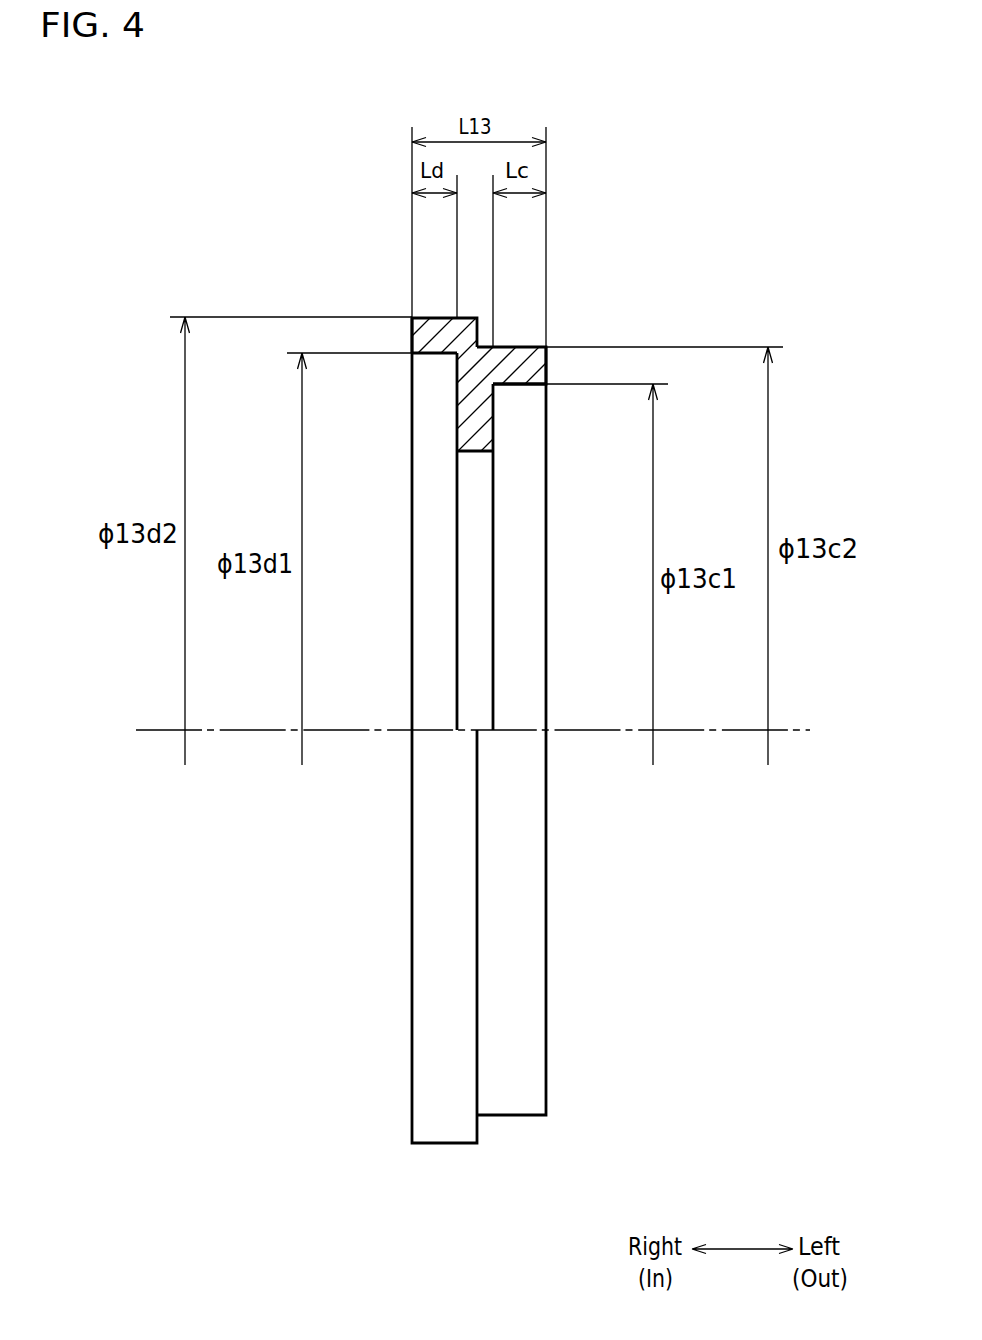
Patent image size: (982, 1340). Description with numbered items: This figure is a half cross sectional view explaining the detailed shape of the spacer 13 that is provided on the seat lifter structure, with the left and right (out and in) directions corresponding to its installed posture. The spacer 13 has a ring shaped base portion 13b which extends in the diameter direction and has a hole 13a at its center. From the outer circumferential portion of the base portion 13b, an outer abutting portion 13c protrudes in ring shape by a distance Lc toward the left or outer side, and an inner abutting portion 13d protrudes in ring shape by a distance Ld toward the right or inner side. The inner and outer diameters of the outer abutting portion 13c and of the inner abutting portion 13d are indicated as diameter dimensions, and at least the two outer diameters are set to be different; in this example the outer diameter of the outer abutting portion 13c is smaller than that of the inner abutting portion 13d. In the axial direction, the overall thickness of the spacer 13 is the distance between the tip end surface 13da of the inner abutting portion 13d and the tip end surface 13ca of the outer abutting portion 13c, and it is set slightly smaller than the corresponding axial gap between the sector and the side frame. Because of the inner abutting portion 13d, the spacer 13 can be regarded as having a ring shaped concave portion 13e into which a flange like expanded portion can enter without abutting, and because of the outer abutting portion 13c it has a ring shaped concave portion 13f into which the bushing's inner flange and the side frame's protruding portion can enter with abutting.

The spacer 13 is at (546, 487).
The hole 13a is at (477, 451).
The base portion 13b is at (462, 432).
The outer abutting portion 13c is at (510, 346).
The tip end surface of outer abutting portion 13ca is at (548, 362).
The inner abutting portion 13d is at (438, 317).
The tip end surface of inner abutting portion 13da is at (412, 335).
The ring shaped concave portion 13e is at (440, 382).
The ring shaped concave portion 13f is at (520, 417).